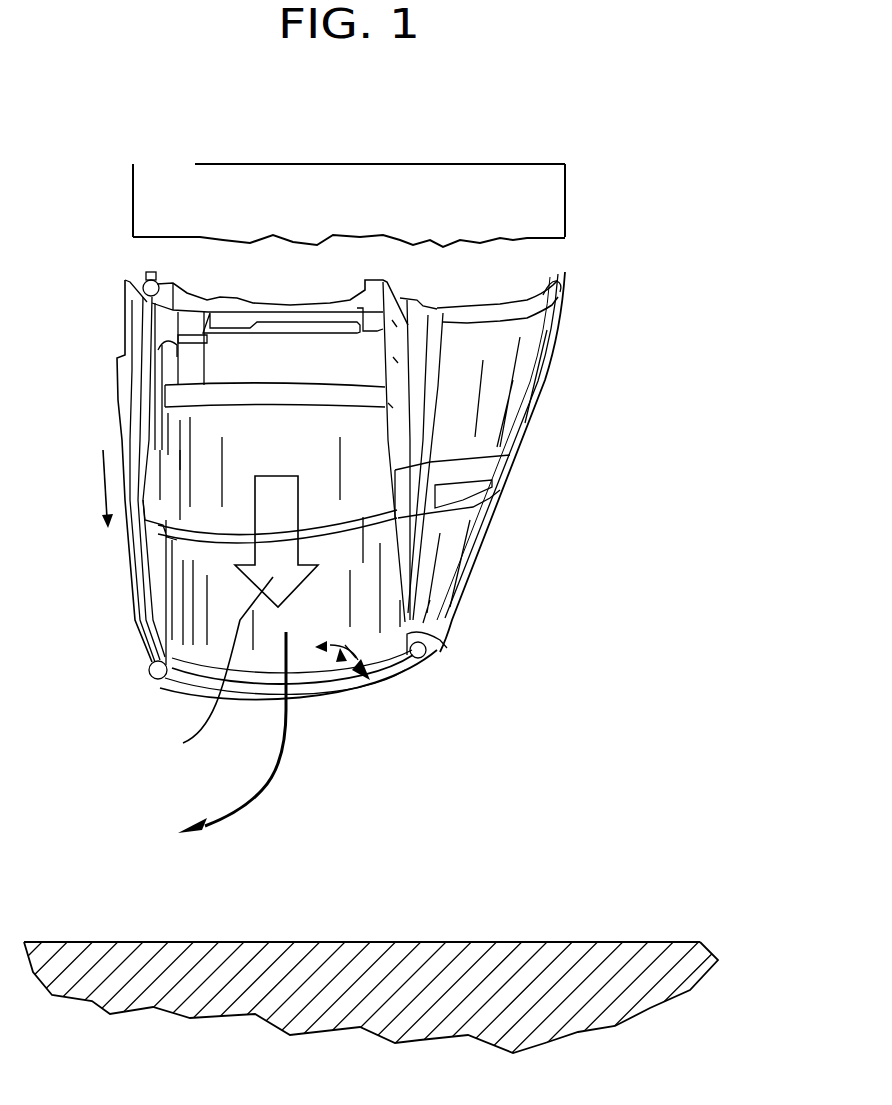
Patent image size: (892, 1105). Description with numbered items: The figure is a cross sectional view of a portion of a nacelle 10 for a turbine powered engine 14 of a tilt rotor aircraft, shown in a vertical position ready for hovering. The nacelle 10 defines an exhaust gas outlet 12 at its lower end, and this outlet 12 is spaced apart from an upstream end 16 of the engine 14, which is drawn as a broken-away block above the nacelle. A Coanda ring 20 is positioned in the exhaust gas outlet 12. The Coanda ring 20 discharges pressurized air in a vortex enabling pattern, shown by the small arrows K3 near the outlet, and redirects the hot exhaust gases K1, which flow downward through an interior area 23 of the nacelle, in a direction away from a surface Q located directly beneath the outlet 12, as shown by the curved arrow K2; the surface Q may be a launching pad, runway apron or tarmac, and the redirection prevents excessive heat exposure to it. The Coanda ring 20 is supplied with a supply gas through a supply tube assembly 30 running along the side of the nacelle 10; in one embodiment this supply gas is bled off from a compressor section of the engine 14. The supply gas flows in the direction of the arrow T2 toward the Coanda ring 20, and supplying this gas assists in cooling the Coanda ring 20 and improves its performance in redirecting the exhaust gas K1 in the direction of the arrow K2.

The nacelle 10 is at (530, 505).
The exhaust gas outlet 12 is at (412, 709).
The turbine powered engine 14 is at (541, 208).
The upstream end 16 is at (190, 158).
The Coanda ring 20 is at (319, 718).
The interior area 23 is at (182, 538).
The supply tube assembly 30 is at (128, 577).
The arrow T2 is at (87, 474).
The hot exhaust gases K1 is at (210, 668).
The arrow K2 is at (233, 800).
The arrows K3 is at (342, 660).
The surface Q is at (620, 942).